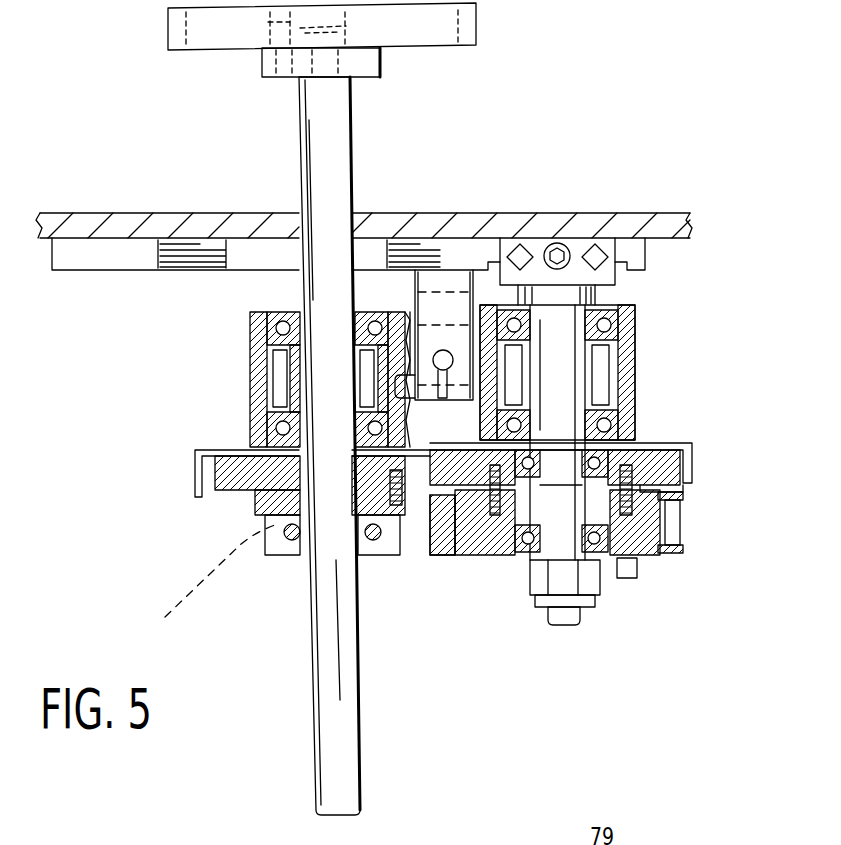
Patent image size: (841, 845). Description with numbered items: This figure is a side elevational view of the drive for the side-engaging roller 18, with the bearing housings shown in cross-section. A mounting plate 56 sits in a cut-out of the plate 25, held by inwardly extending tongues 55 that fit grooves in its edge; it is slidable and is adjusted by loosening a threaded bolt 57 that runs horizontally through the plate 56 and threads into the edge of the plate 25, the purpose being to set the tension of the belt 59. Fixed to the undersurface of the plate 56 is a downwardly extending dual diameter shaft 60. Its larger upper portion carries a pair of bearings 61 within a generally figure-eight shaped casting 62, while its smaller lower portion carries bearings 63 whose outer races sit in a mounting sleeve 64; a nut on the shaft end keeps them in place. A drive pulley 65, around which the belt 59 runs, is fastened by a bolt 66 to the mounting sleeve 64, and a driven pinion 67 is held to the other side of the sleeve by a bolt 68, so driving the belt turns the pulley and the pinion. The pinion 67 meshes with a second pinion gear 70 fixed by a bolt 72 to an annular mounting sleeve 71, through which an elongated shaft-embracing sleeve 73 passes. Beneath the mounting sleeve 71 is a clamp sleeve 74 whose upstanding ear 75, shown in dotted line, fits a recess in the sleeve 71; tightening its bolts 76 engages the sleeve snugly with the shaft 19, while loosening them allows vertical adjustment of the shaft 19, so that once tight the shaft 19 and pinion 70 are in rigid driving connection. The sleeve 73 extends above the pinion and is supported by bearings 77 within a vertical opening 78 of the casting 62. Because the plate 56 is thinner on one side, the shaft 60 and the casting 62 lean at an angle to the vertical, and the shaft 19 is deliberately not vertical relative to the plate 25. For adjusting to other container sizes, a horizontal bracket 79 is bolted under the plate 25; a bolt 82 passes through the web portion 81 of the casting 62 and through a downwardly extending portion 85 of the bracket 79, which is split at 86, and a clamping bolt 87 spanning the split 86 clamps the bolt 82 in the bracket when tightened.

The roller 18 is at (477, 23).
The shaft 19 is at (361, 700).
The plate 25 is at (440, 215).
The tongues 55 is at (348, 198).
The mounting plate 56 is at (596, 224).
The threaded bolt 57 is at (560, 244).
The belt 59 is at (683, 524).
The dual diameter shaft 60 is at (569, 391).
The bearings 61 is at (640, 342).
The casting 62 is at (596, 365).
The bearings 63 is at (530, 540).
The mounting sleeve 64 is at (625, 558).
The drive pulley 65 is at (650, 543).
The bolt 66 is at (633, 578).
The driven pinion 67 is at (665, 460).
The bolt 68 is at (495, 462).
The second pinion gear 70 is at (255, 508).
The mounting sleeve 71 is at (265, 515).
The bolt 72 is at (396, 505).
The shaft-embracing sleeve 73 is at (305, 563).
The clamp sleeve 74 is at (268, 547).
The upstanding ear 75 is at (209, 588).
The bolts 76 is at (298, 537).
The bearings 77 is at (285, 428).
The vertical opening 78 is at (258, 352).
The horizontal bracket 79 is at (436, 282).
The web portion 81 is at (410, 330).
The bolt 82 is at (446, 350).
The downwardly extending portion 85 is at (435, 458).
The split 86 is at (445, 400).
The clamping bolt 87 is at (404, 393).